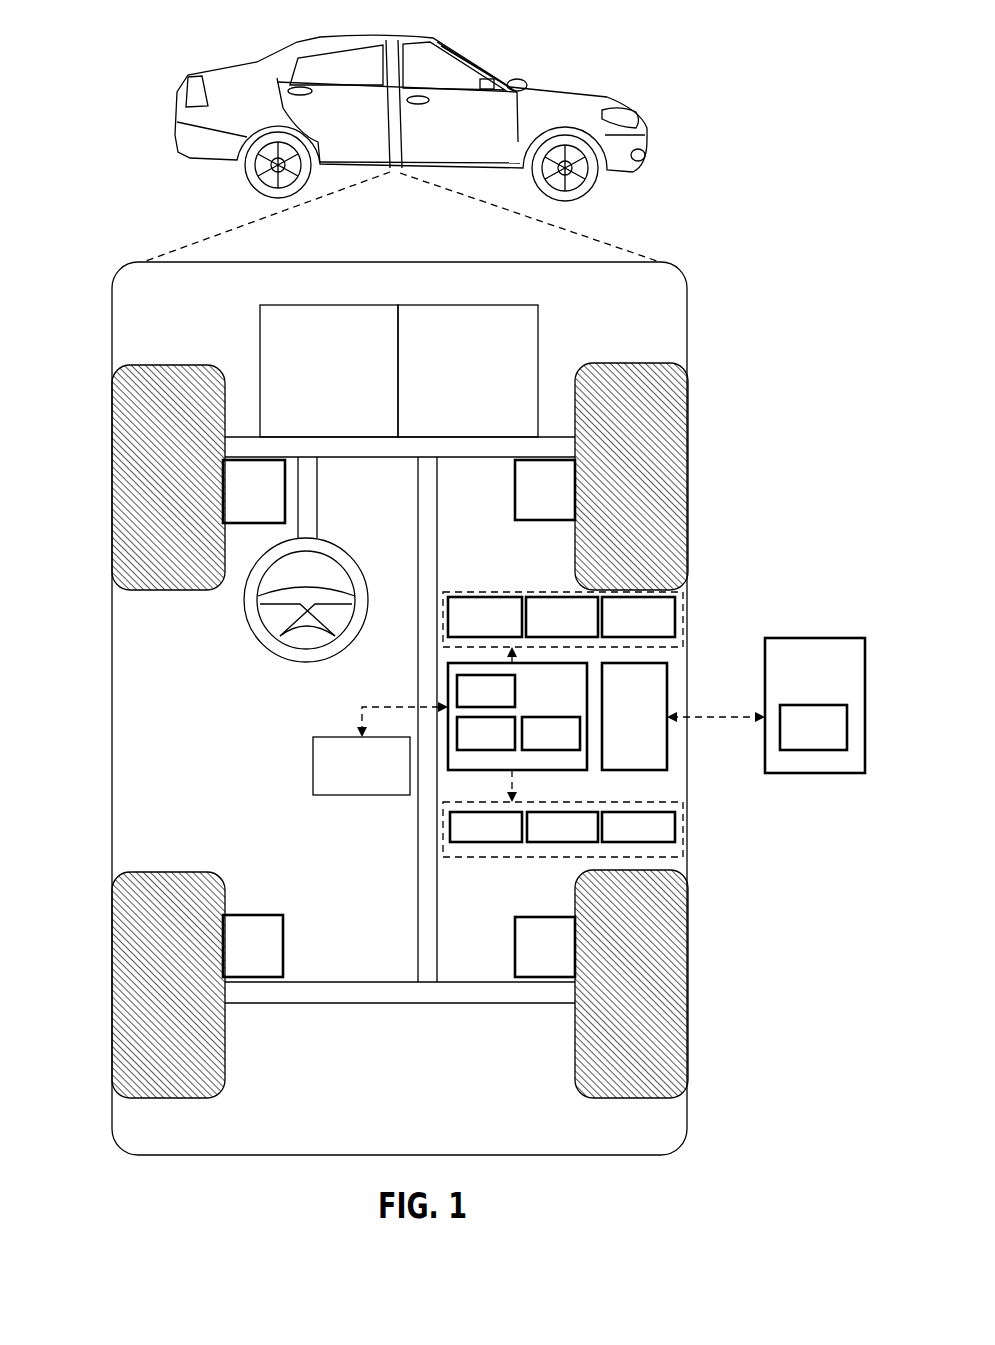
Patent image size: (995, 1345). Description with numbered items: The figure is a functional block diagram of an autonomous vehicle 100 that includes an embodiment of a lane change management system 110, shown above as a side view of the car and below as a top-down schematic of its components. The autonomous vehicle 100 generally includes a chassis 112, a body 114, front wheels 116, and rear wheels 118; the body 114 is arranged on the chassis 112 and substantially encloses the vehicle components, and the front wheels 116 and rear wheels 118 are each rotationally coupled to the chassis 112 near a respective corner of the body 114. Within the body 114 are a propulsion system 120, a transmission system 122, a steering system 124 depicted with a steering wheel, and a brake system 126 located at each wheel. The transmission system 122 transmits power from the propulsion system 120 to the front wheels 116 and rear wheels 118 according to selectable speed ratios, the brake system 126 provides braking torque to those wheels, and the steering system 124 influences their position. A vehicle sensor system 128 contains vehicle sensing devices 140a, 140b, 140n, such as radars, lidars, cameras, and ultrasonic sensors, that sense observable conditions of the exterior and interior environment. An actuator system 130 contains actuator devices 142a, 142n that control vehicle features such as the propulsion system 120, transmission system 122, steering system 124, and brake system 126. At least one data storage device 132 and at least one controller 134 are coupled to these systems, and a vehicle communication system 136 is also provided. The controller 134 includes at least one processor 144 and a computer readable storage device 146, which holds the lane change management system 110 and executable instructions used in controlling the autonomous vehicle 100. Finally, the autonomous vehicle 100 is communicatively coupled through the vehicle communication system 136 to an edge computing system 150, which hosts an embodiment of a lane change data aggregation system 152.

The autonomous vehicle 100 is at (185, 105).
The lane change management system 110 is at (471, 700).
The chassis 112 is at (417, 843).
The body 114 is at (110, 677).
The front wheels 116 is at (170, 365).
The rear wheels 118 is at (167, 1097).
The propulsion system 120 is at (314, 379).
The transmission system 122 is at (453, 379).
The steering system 124 is at (327, 519).
The brake system 126 is at (239, 501).
The vehicle sensor system 128 is at (563, 602).
The actuator system 130 is at (563, 846).
The data storage device 132 is at (347, 775).
The controller 134 is at (517, 724).
The vehicle communication system 136 is at (619, 726).
The vehicle sensing device 140a is at (465, 626).
The vehicle sensing device 140b is at (542, 626).
The vehicle sensing device 140n is at (618, 626).
The actuator device 142a is at (466, 837).
The actuator device 142n is at (618, 837).
The processor 144 is at (471, 743).
The computer readable storage device 146 is at (536, 743).
The edge computing system 150 is at (796, 686).
The lane change data aggregation system 152 is at (796, 739).